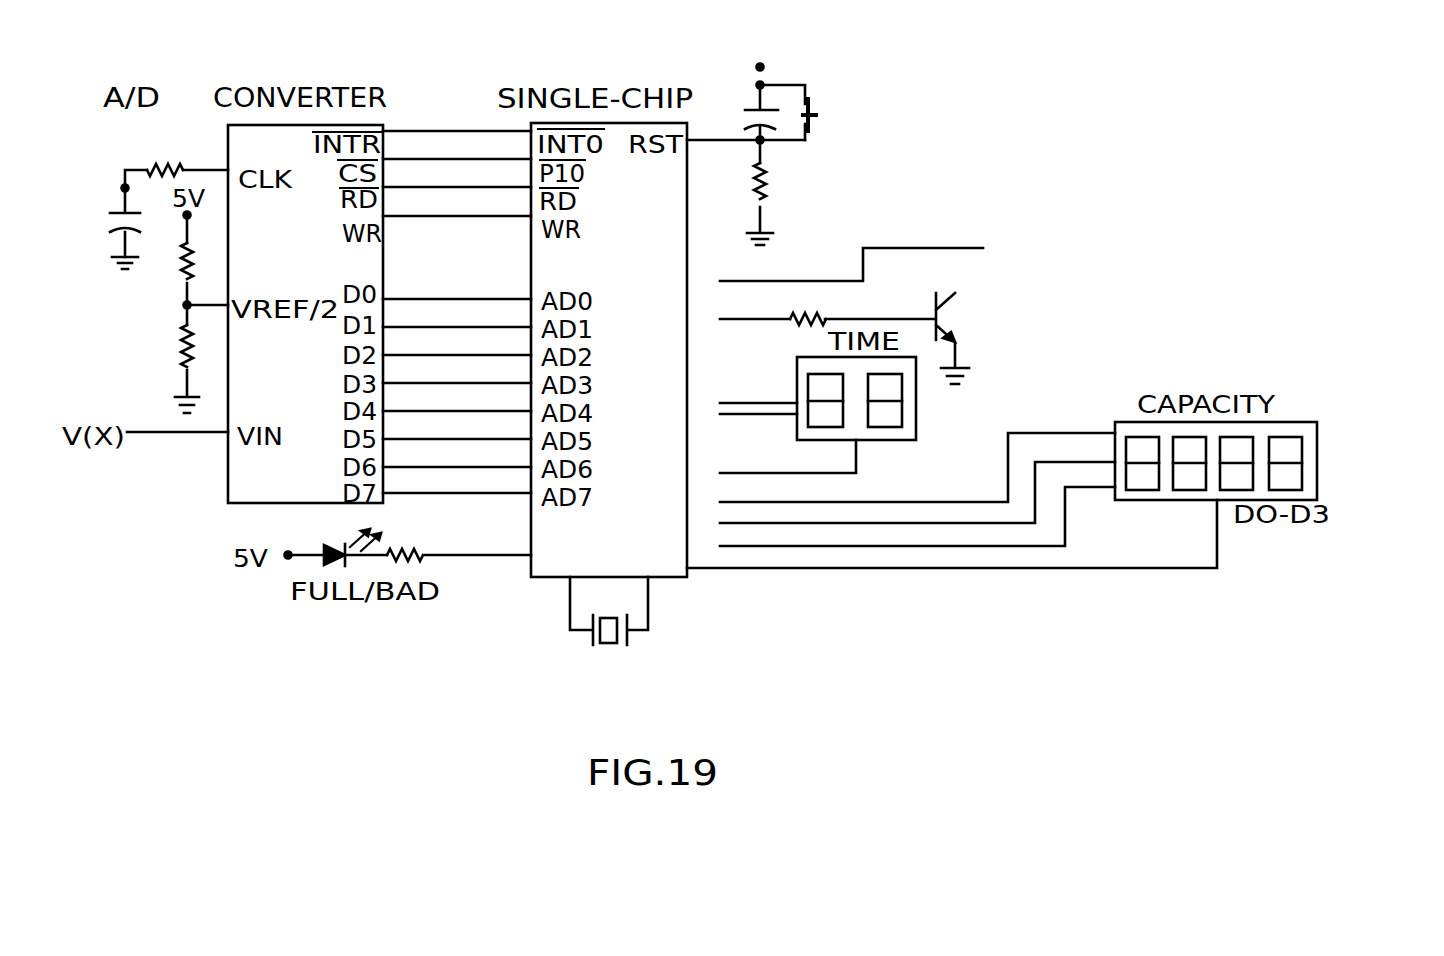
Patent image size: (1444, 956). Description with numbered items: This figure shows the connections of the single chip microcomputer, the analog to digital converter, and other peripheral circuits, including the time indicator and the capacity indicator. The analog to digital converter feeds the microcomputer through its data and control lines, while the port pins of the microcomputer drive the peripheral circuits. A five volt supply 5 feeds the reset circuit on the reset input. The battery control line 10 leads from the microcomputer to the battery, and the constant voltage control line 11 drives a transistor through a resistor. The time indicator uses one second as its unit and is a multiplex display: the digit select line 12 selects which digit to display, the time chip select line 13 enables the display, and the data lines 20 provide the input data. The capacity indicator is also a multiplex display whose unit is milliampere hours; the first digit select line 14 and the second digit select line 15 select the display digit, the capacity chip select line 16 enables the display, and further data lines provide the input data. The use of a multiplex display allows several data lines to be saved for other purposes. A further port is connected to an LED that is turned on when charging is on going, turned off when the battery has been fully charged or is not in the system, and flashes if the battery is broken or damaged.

The 5V supply / reset circuit 5 is at (760, 85).
The port P10 battery control line 10 is at (720, 281).
The port P11 constant voltage control transistor 11 is at (720, 319).
The port P12 time display AO line 12 is at (720, 403).
The port P13 time display CS line 13 is at (720, 414).
The port P14 capacity display AO line 14 is at (720, 502).
The port P15 capacity display AI line 15 is at (720, 523).
The port P16 capacity display CS line 16 is at (720, 546).
The ports P20-P23 time display data lines 20 is at (720, 473).